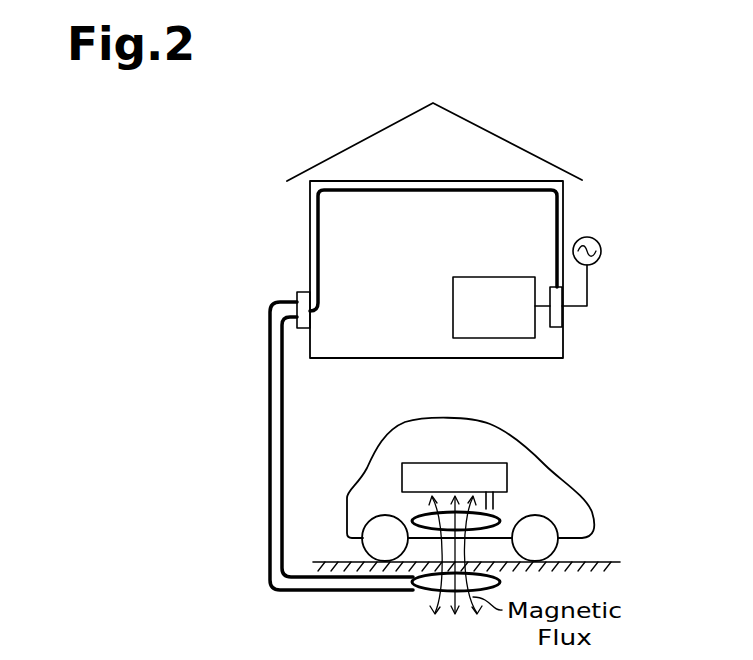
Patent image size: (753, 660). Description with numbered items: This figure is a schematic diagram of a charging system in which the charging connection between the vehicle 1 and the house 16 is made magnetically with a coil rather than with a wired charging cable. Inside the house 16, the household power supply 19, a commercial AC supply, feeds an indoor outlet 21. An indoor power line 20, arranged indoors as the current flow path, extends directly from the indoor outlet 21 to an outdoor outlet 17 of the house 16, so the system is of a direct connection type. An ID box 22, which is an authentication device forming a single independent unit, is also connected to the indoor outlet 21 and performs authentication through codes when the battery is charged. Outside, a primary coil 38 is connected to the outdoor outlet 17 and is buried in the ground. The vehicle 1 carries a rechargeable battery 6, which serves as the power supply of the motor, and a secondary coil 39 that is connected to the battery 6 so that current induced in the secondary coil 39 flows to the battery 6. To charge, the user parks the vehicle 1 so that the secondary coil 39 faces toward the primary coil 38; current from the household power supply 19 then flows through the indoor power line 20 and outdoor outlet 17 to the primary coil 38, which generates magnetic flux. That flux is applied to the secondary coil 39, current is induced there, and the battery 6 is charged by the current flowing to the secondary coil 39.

The vehicle 1 is at (538, 450).
The battery 6 is at (467, 463).
The house 16 is at (528, 148).
The outdoor outlet 17 is at (297, 294).
The household power supply 19 is at (594, 237).
The indoor power line 20 is at (433, 190).
The indoor outlet 21 is at (558, 326).
The ID box 22 is at (497, 277).
The primary coil 38 is at (430, 592).
The secondary coil 39 is at (416, 514).